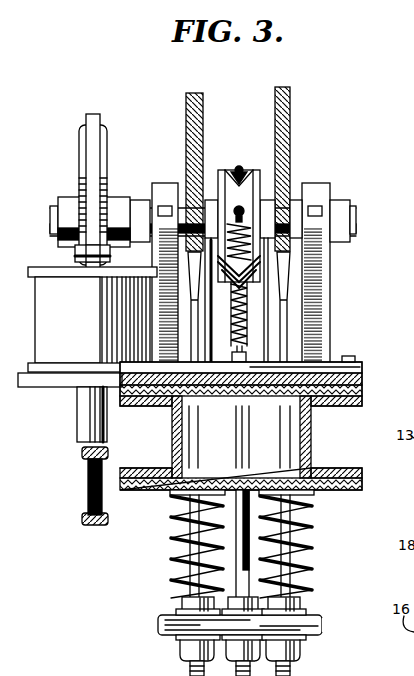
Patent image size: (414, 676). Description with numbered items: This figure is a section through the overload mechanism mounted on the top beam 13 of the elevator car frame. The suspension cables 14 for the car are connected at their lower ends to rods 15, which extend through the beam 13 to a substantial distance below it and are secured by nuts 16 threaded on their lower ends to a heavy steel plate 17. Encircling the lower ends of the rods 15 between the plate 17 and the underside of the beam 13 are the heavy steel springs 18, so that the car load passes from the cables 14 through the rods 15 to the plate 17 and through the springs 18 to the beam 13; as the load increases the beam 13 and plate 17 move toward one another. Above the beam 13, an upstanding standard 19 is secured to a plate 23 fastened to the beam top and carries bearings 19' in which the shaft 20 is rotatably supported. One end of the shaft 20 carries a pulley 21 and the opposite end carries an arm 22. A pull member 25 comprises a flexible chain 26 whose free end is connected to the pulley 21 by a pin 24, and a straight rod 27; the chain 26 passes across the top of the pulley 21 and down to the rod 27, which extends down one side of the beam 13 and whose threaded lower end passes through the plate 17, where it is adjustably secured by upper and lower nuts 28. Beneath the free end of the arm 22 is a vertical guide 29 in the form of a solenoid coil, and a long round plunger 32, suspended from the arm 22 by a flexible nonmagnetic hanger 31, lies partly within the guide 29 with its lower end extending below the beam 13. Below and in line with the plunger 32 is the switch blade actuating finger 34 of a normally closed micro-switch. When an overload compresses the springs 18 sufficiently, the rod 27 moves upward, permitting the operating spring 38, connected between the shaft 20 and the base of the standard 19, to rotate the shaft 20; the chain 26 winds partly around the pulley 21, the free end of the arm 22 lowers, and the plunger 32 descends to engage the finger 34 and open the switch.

The top beam 13 is at (362, 395).
The suspension cables 14 is at (275, 104).
The rods 15 is at (192, 423).
The nuts 16 is at (172, 645).
The heavy steel plate 17 is at (324, 625).
The springs 18 is at (178, 540).
The standard 19 is at (260, 359).
The bearings 19' is at (250, 258).
The shaft 20 is at (50, 215).
The pulley 21 is at (222, 176).
The arm 22 is at (76, 252).
The plate 23 is at (362, 384).
The pin 24 is at (244, 176).
The pull member 25 is at (226, 443).
The chain 26 is at (239, 166).
The rod 27 is at (238, 540).
The nuts 28 is at (256, 640).
The vertical guide 29 is at (66, 357).
The flexible hanger 31 is at (97, 116).
The plunger 32 is at (85, 415).
The switch blade actuating finger 34 is at (82, 452).
The operating spring 38 is at (236, 330).